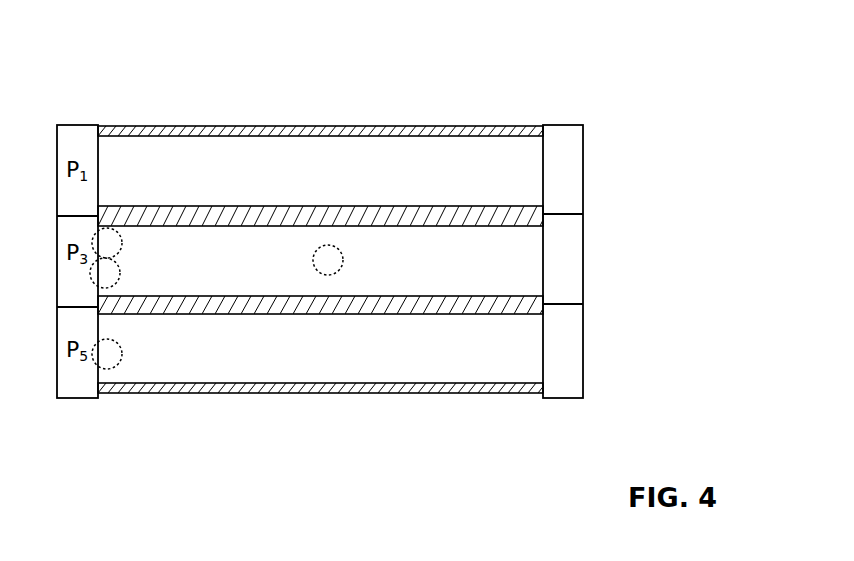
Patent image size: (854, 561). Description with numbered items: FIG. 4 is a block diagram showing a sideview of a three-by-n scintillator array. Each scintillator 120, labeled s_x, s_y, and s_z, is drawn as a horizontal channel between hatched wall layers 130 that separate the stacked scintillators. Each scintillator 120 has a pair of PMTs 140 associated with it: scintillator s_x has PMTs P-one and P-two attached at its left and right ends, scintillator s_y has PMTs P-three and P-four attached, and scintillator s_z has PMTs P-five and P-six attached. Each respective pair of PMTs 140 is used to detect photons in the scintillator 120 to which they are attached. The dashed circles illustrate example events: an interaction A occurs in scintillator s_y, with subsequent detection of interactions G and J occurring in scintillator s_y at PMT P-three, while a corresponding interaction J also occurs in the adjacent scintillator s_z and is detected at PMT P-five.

The scintillator 120 is at (315, 207).
The channel wall layer 130 is at (338, 224).
The PMTs 140 is at (606, 270).